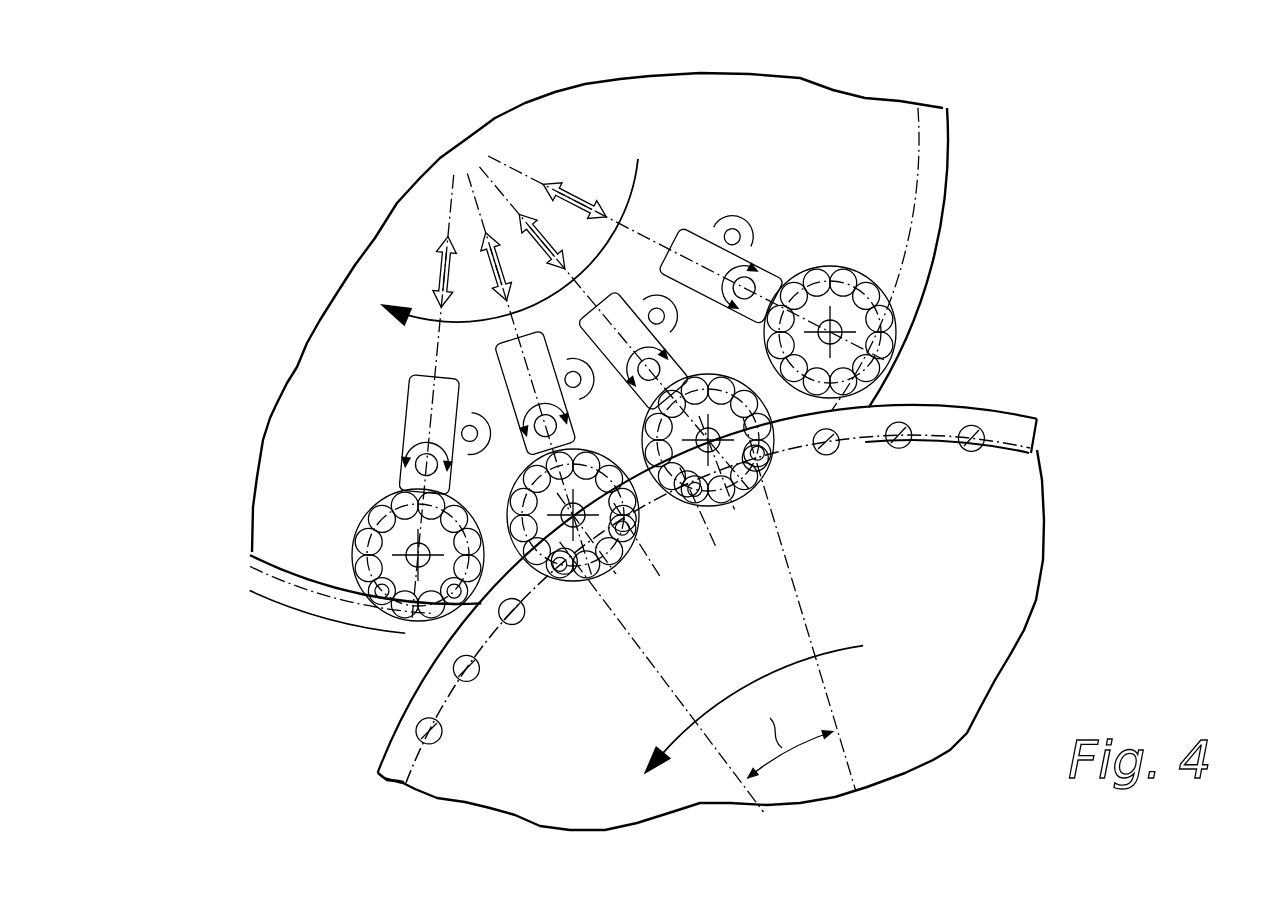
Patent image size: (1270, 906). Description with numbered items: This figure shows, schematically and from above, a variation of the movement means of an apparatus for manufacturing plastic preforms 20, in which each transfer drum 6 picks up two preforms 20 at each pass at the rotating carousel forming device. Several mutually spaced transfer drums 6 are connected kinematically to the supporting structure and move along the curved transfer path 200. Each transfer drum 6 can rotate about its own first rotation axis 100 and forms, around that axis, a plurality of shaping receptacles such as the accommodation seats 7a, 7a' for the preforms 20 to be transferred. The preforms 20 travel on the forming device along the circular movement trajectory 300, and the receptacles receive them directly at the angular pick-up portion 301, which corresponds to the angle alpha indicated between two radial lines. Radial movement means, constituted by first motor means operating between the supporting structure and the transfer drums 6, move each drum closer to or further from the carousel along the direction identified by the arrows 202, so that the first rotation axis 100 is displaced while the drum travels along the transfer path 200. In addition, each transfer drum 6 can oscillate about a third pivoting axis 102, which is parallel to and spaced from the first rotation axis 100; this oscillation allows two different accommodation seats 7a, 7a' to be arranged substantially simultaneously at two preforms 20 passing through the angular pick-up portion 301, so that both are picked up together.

The transfer drum 6 is at (880, 283).
The plastic preform 20 is at (768, 458).
The first rotation axis 100 is at (833, 270).
The third pivoting axis 102 is at (747, 273).
The transfer path 200 is at (915, 208).
The arrows of radial movement direction 202 is at (455, 230).
The circular movement trajectory 300 is at (1018, 440).
The angular pick-up portion 301 is at (690, 557).
The shaping receptacle 7a is at (540, 579).
The shaping receptacle 7a' is at (657, 533).